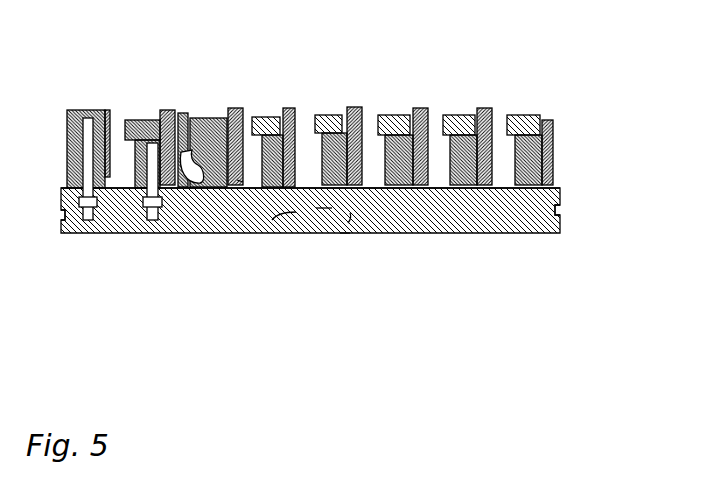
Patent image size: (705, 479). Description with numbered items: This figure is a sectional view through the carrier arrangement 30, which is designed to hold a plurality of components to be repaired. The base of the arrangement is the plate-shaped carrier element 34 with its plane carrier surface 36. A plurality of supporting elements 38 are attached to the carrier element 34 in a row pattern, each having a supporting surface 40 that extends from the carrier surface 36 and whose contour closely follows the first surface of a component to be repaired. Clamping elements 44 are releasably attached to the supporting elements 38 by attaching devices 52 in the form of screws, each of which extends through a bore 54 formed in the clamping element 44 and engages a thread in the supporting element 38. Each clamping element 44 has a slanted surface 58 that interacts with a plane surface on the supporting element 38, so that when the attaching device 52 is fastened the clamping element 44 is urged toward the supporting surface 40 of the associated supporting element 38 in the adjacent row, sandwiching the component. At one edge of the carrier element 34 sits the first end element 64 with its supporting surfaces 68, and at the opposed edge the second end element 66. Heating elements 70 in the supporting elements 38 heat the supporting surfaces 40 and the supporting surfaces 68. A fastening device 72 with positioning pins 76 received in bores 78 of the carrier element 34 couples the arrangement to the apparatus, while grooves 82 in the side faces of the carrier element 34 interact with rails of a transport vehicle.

The carrier arrangement 30 is at (585, 65).
The carrier element 34 is at (565, 200).
The carrier surface 36 is at (558, 184).
The supporting element 38 is at (293, 108).
The supporting surface 40 is at (326, 134).
The clamping element 44 is at (197, 137).
The attaching device 52 is at (196, 160).
The bore 54 is at (149, 118).
The slanted surface 58 is at (350, 108).
The first end element 64 is at (70, 110).
The second end element 66 is at (553, 155).
The supporting surfaces 68 is at (113, 122).
The heating element 70 is at (237, 180).
The fastening device 72 is at (343, 271).
The positioning pin 76 is at (348, 223).
The bore 78 is at (324, 211).
The groove 82 is at (563, 223).